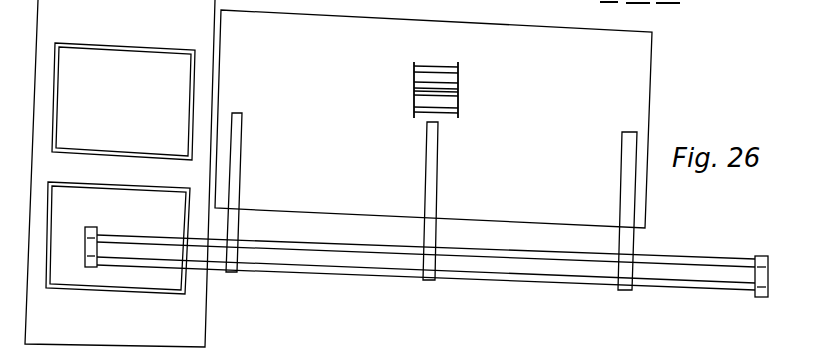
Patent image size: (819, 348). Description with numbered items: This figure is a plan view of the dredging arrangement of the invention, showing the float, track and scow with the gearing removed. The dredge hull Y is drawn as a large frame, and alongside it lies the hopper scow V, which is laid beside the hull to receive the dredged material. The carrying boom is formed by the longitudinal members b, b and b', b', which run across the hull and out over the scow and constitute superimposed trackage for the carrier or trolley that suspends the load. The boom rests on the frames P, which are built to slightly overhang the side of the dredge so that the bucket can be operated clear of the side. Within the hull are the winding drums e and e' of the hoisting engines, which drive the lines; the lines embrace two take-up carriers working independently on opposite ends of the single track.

The hopper scow V is at (120, 173).
The dredge hull Y is at (433, 119).
The frames P is at (241, 170).
The winding drum e is at (447, 90).
The winding drum e' is at (450, 101).
The longitudinal members b is at (426, 272).
The longitudinal members b' is at (426, 268).